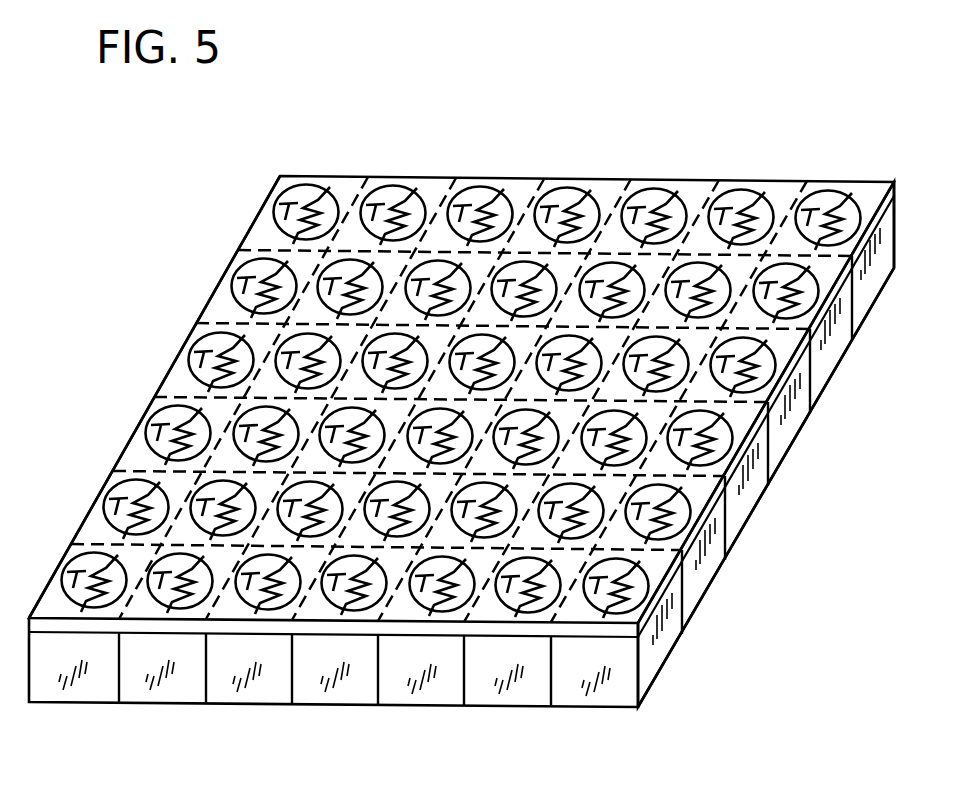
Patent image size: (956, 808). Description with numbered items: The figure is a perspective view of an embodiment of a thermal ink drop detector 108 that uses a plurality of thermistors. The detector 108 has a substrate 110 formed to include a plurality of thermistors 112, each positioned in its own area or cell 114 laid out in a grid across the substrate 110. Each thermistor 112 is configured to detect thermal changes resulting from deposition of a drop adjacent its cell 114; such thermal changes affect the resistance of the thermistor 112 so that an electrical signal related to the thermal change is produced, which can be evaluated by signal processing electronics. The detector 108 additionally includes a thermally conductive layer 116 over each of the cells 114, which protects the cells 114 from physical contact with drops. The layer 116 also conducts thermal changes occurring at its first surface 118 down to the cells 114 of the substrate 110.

The thermal ink drop detector 108 is at (745, 123).
The substrate 110 is at (770, 491).
The thermistors 112 is at (418, 208).
The area or cell 114 is at (478, 268).
The thermally conductive layer 116 is at (577, 634).
The first surface 118 is at (71, 547).